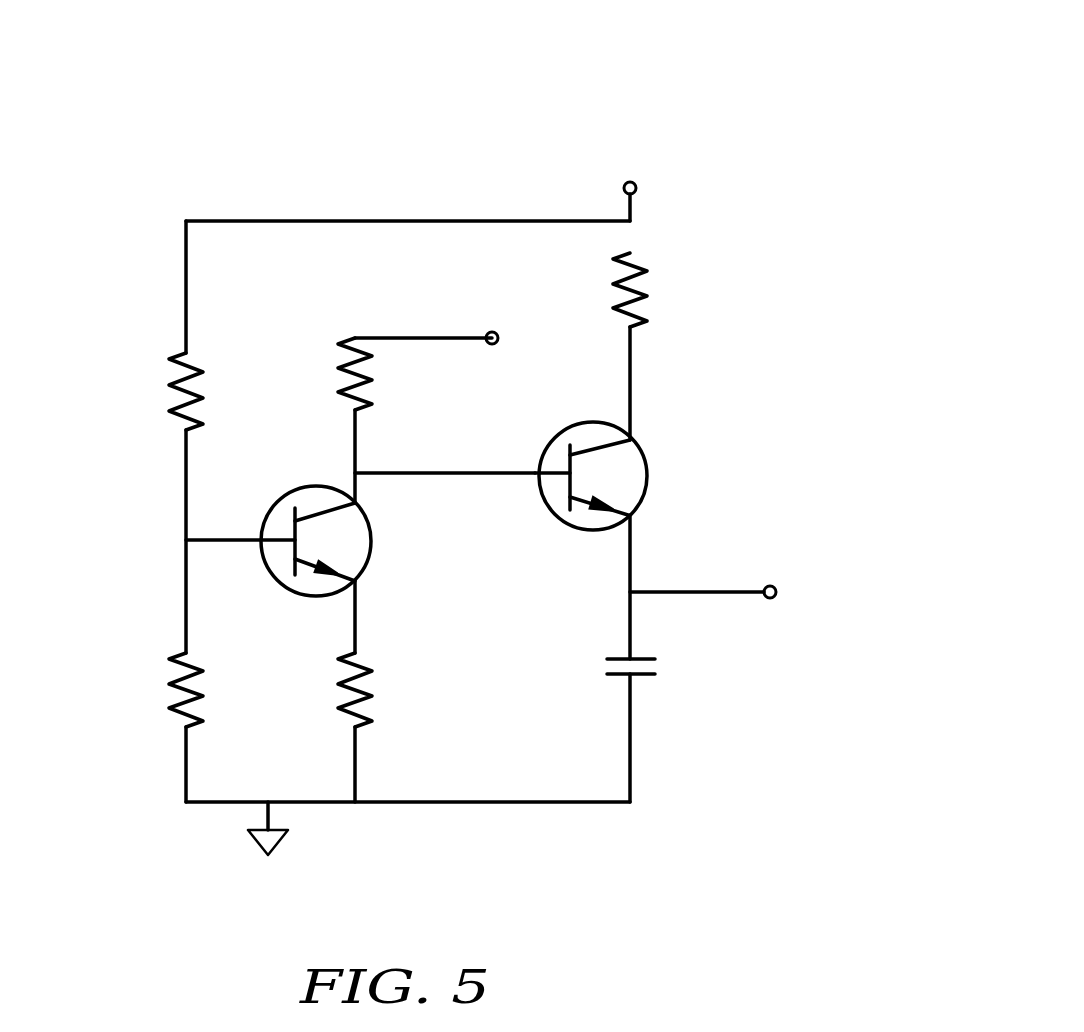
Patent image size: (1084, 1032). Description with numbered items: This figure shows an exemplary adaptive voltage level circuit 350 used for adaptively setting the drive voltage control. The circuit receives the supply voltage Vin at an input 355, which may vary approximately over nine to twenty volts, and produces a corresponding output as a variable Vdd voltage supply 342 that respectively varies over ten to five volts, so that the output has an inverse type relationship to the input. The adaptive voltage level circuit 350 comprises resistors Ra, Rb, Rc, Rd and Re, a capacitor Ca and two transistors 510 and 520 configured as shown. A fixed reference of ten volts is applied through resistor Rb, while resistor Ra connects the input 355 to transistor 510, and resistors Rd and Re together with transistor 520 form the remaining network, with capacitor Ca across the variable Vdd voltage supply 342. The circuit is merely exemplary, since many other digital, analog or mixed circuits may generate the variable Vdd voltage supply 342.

The adaptive voltage level circuit 350 is at (776, 58).
The input 355 is at (626, 184).
The variable Vdd voltage supply 342 is at (777, 589).
The transistor 510 is at (650, 457).
The transistor 520 is at (373, 553).